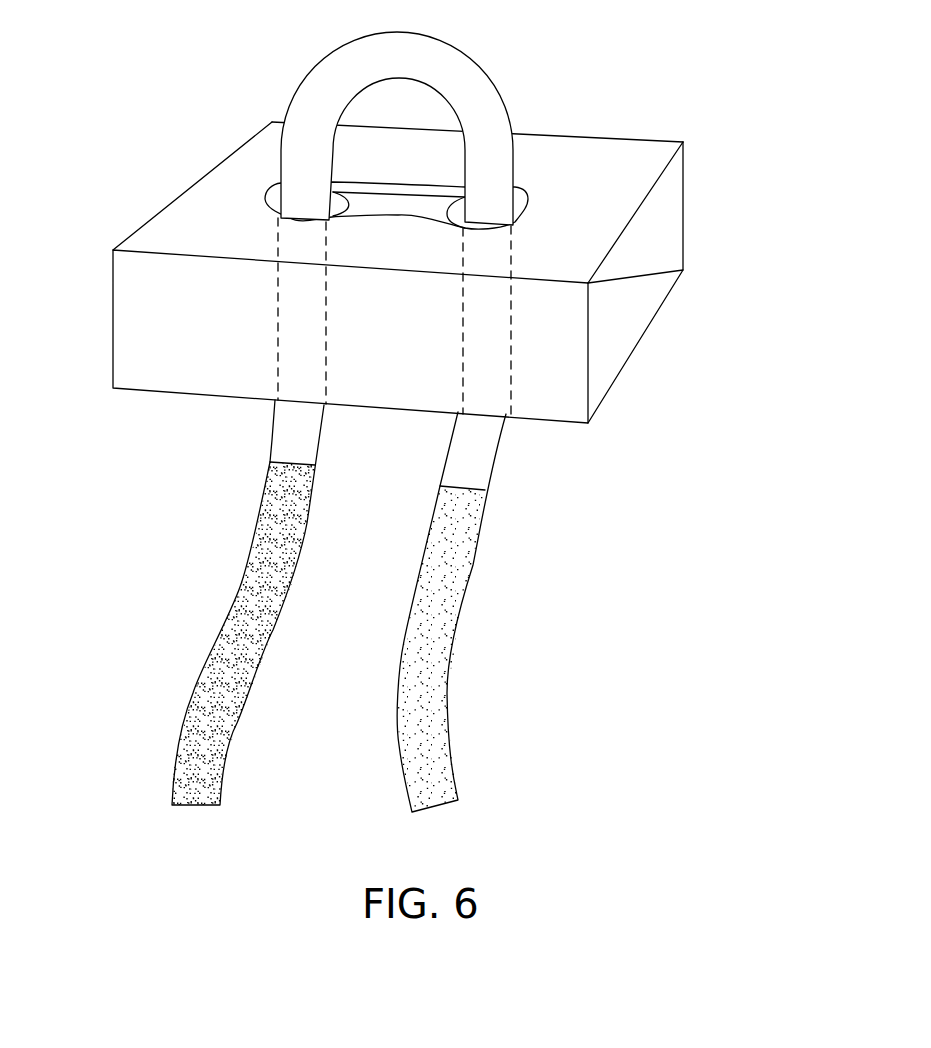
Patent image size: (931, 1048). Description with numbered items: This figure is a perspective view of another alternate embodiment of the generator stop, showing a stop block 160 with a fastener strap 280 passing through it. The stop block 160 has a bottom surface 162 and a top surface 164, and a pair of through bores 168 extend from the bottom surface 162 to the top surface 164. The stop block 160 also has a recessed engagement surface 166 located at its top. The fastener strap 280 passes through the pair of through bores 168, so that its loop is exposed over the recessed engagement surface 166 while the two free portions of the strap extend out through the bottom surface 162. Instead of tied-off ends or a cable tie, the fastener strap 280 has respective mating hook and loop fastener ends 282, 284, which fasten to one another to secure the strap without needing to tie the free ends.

The stop block 160 is at (447, 257).
The bottom surface 162 is at (612, 387).
The top surface 164 is at (580, 177).
The recessed engagement surface 166 is at (402, 207).
The through bores 168 is at (275, 197).
The fastener strap 280 is at (326, 618).
The hook fastener end 282 is at (417, 758).
The loop fastener end 284 is at (228, 660).